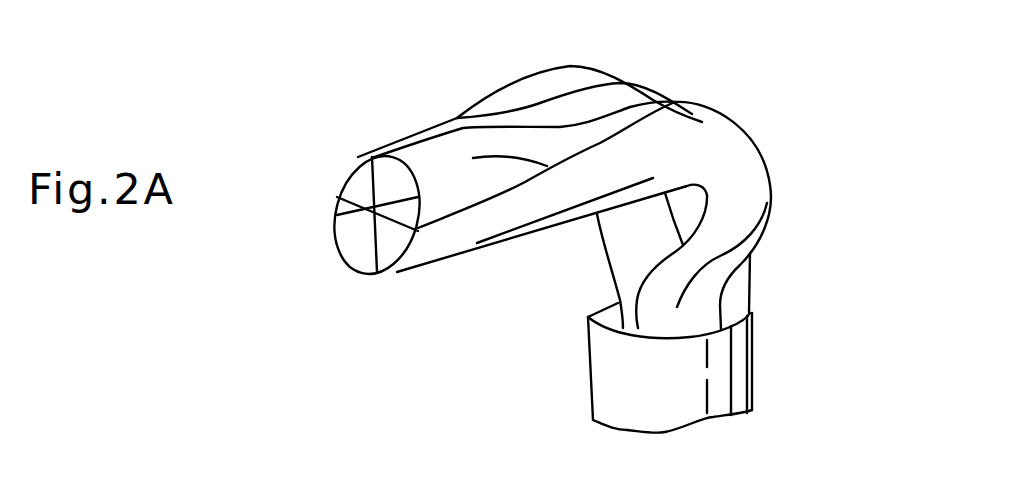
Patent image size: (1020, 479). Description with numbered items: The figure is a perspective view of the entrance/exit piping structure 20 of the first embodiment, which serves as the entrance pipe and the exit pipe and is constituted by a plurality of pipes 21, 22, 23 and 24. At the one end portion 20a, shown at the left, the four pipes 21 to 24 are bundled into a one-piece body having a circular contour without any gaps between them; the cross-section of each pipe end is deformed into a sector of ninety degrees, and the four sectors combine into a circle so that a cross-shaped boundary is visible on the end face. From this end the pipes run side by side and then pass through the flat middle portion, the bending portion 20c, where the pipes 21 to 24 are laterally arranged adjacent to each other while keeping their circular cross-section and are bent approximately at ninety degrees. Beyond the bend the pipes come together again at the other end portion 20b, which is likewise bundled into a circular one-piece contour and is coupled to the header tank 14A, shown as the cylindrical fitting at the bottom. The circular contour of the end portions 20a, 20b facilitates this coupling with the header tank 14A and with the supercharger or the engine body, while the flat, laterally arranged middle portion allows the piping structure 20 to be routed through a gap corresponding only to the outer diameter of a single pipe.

The entrance/exit piping structure 20 is at (465, 93).
The one end portion 20a is at (357, 147).
The other end portion 20b is at (614, 293).
The bent portion of tube member 20c is at (688, 77).
The pipe 21 is at (348, 174).
The pipe 22 is at (390, 196).
The pipe 23 is at (360, 235).
The pipe 24 is at (400, 247).
The header tank 14A is at (613, 373).